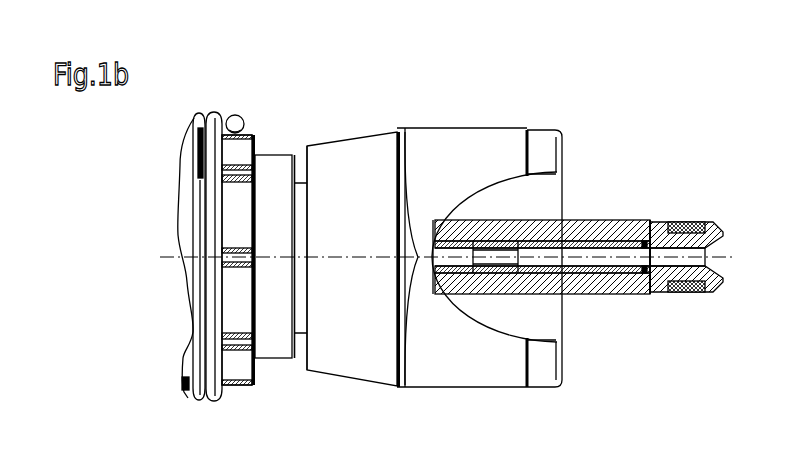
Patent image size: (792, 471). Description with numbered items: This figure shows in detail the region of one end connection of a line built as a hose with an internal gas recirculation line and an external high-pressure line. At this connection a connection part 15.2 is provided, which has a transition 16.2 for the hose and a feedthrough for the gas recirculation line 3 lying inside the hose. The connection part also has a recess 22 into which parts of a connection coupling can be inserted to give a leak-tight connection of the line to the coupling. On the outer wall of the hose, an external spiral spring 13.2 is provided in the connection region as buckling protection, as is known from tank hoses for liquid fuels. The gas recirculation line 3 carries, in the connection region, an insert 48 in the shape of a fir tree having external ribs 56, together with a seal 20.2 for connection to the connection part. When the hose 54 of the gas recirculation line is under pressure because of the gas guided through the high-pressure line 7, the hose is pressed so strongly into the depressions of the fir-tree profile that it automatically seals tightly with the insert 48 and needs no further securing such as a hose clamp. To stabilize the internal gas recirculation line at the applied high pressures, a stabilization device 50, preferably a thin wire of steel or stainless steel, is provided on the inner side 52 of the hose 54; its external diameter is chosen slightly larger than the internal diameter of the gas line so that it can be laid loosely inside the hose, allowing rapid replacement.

The spiral spring 13.2 is at (208, 113).
The transition 16.2 is at (247, 148).
The connection part 15.2 is at (440, 153).
The gas recirculation line 3 is at (500, 218).
The high-pressure line 7 is at (540, 203).
The recess 22 is at (537, 313).
The hose of the gas recirculation line 54 is at (630, 296).
The inner side of the hose 52 is at (452, 297).
The stabilization device 50 is at (498, 300).
The external ribs 56 is at (613, 235).
The insert 48 is at (652, 233).
The seal 20.2 is at (680, 218).